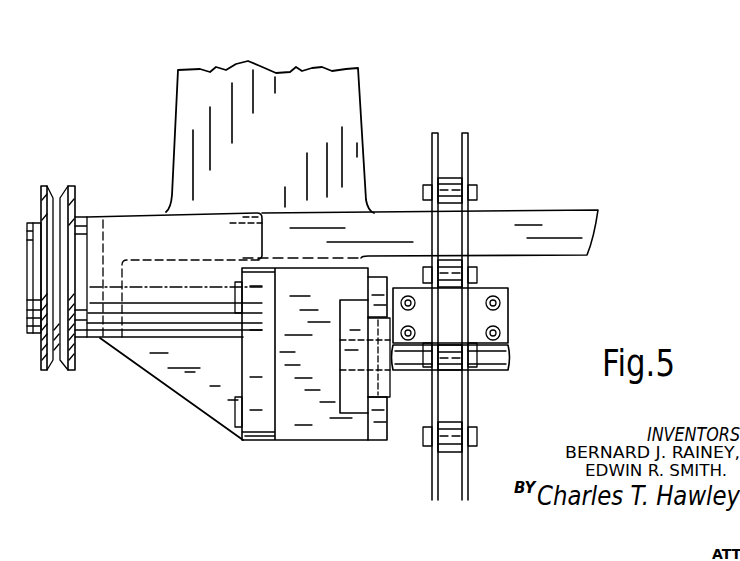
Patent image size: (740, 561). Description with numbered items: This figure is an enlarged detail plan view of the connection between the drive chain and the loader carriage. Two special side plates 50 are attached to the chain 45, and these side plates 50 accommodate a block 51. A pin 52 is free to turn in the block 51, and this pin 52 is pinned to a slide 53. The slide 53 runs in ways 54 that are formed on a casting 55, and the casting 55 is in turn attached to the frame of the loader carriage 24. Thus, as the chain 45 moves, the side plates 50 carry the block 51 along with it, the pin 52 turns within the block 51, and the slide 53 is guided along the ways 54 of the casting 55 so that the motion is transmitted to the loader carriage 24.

The loader carriage 24 is at (172, 185).
The chain 45 is at (478, 436).
The side plates 50 is at (428, 315).
The block 51 is at (508, 368).
The pin 52 is at (508, 354).
The slide 53 is at (361, 405).
The ways 54 is at (373, 285).
The casting 55 is at (290, 440).